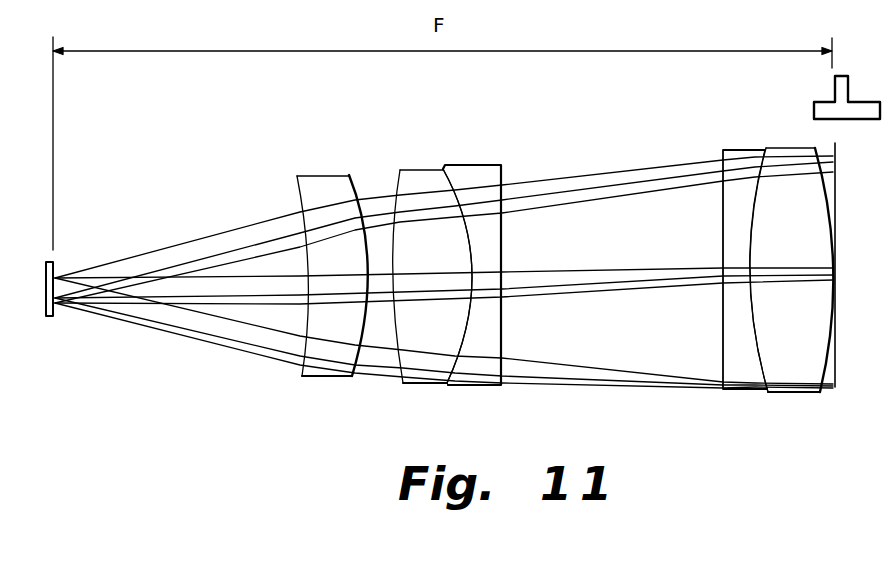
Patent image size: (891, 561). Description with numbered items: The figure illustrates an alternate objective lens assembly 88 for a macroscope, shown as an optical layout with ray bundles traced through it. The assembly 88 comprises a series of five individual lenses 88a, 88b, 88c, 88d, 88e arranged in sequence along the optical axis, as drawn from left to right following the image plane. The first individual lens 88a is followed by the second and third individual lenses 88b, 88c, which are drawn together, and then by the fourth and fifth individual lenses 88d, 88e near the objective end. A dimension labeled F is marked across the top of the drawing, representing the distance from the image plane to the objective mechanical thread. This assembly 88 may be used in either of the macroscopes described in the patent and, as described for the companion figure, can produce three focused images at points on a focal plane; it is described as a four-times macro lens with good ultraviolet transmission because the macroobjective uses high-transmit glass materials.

The objective lens assembly 88 is at (215, 136).
The individual lens 88a is at (312, 175).
The individual lens 88b is at (412, 170).
The individual lens 88c is at (470, 164).
The individual lens 88d is at (730, 150).
The individual lens 88e is at (777, 148).